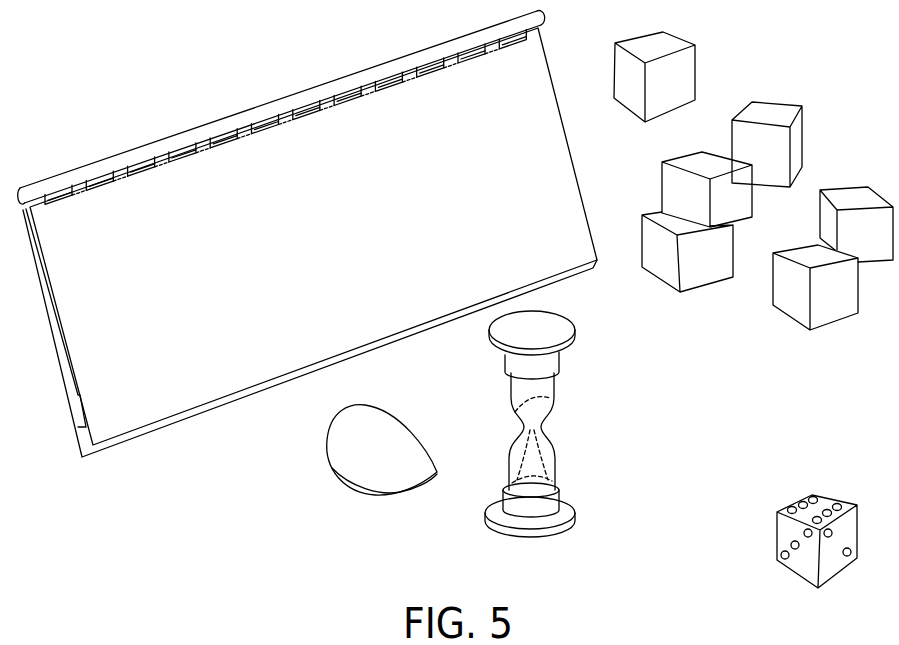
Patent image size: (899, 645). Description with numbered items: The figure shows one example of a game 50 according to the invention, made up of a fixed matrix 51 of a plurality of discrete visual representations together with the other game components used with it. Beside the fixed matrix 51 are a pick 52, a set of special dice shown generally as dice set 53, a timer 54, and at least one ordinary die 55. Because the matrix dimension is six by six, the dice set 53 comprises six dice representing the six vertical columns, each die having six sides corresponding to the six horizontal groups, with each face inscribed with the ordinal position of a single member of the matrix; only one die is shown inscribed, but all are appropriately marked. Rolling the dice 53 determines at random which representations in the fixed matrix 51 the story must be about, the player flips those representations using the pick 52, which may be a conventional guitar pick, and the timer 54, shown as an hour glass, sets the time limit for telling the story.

The game 50 is at (274, 48).
The fixed matrix 51 is at (165, 202).
The pick 52 is at (327, 441).
The set of special dice 53 is at (754, 317).
The timer 54 is at (557, 385).
The ordinary die 55 is at (787, 508).